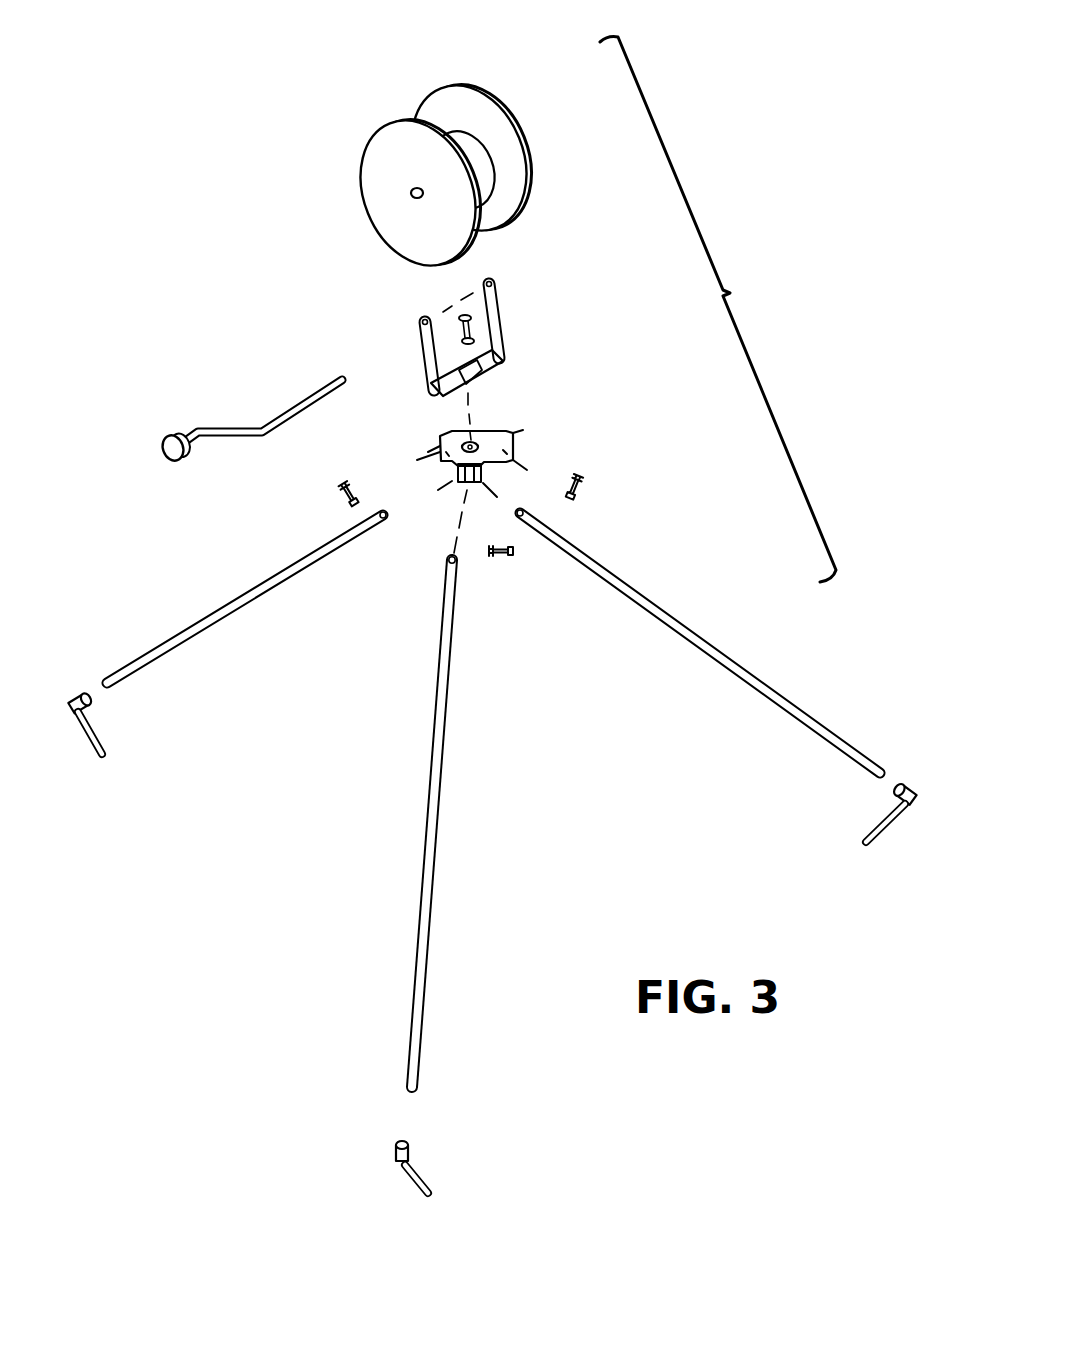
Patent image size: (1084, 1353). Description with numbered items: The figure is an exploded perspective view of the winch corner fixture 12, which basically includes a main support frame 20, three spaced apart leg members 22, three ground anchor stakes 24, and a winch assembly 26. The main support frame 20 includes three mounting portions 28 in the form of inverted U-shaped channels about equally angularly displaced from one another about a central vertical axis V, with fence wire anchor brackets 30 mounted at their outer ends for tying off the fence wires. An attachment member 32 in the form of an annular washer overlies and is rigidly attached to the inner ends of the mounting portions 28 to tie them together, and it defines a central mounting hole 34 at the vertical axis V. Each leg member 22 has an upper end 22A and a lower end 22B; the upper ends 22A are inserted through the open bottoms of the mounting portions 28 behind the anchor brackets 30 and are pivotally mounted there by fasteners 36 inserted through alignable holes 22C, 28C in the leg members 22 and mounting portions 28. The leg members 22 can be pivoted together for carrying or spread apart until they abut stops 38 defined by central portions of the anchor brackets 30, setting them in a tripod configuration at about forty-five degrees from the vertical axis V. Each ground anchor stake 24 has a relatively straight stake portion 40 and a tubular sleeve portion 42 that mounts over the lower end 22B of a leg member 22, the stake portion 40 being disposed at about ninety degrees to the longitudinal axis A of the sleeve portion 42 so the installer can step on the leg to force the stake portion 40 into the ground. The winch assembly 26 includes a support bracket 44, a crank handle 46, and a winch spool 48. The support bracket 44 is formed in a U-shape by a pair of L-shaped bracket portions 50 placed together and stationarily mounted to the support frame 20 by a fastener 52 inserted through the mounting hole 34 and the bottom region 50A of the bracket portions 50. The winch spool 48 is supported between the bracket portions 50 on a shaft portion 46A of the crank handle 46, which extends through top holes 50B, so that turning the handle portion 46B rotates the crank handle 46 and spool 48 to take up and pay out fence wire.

The winch corner fixture 12 is at (740, 272).
The main support frame 20 is at (473, 432).
The leg members 22 is at (493, 798).
The upper end 22A is at (443, 585).
The lower end 22B is at (120, 684).
The holes 22C is at (446, 571).
The ground anchor stakes 24 is at (490, 932).
The winch assembly 26 is at (290, 273).
The mounting portions 28 is at (450, 480).
The holes 28C is at (410, 328).
The fence wire anchor brackets 30 is at (428, 452).
The attachment member 32 is at (513, 440).
The central mounting hole 34 is at (447, 430).
The fasteners 36 is at (338, 497).
The stops 38 is at (464, 484).
The stake portion 40 is at (65, 722).
The tubular sleeve portion 42 is at (78, 690).
The support bracket 44 is at (505, 292).
The crank handle 46 is at (222, 406).
The shaft portion 46A is at (300, 400).
The handle portion 46B is at (165, 440).
The winch spool 48 is at (514, 132).
The bracket portions 50 is at (466, 295).
The bracket base 50A is at (480, 380).
The top holes 50B is at (421, 318).
The fastener 52 is at (460, 311).
The central vertical axis V is at (512, 432).
The longitudinal axis A is at (95, 693).